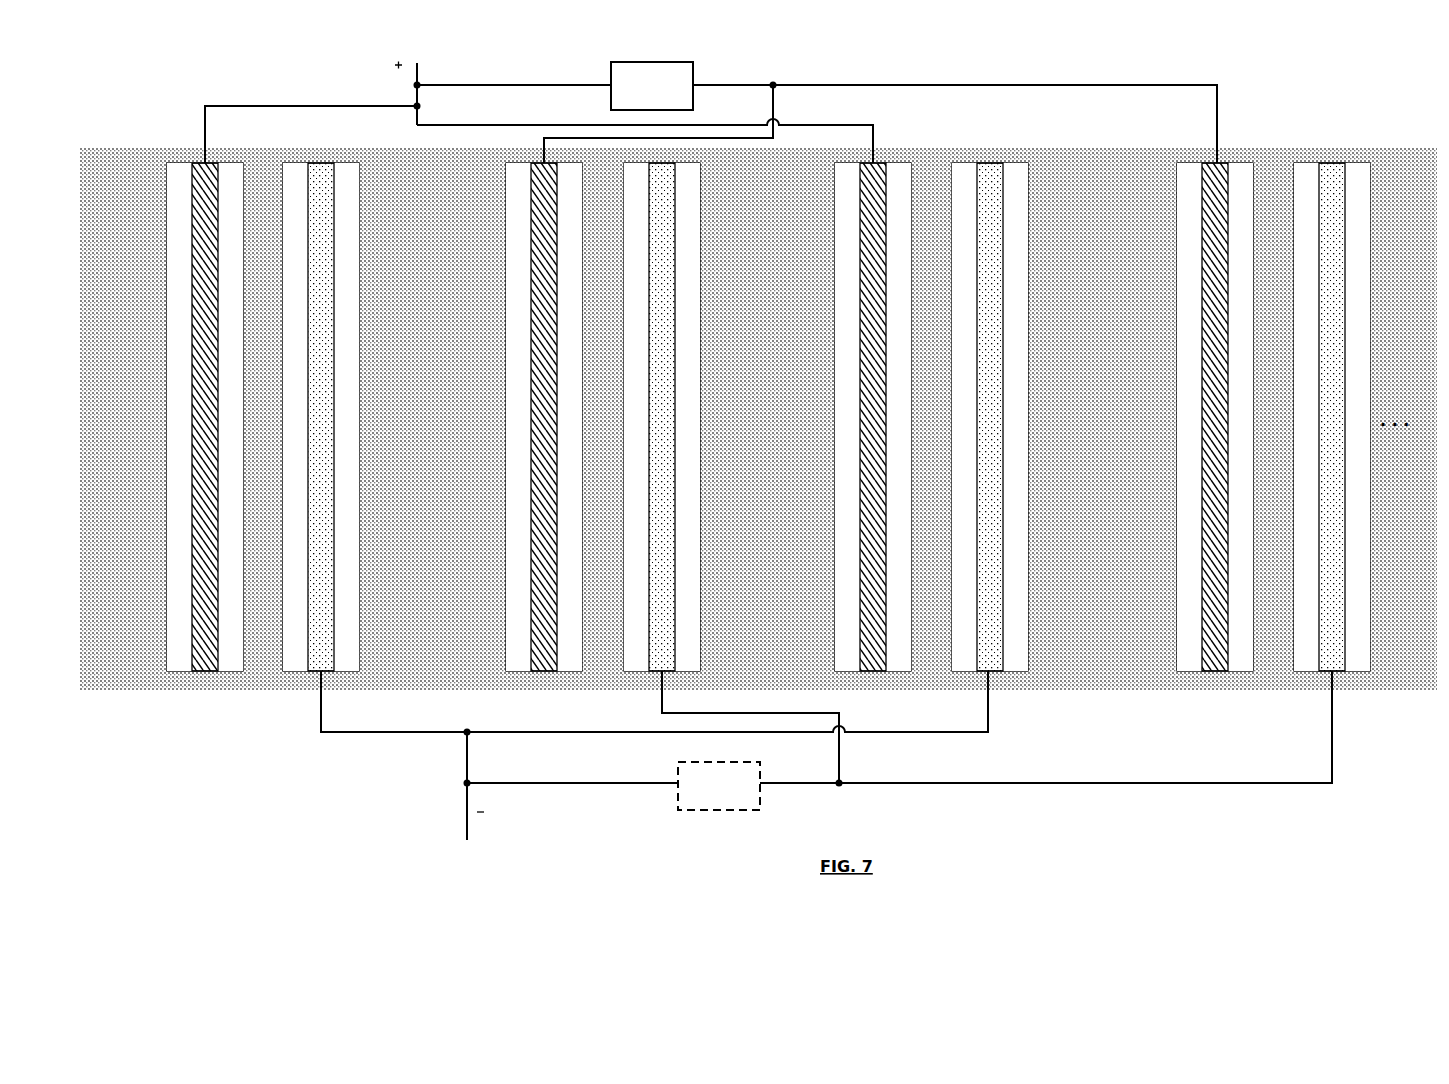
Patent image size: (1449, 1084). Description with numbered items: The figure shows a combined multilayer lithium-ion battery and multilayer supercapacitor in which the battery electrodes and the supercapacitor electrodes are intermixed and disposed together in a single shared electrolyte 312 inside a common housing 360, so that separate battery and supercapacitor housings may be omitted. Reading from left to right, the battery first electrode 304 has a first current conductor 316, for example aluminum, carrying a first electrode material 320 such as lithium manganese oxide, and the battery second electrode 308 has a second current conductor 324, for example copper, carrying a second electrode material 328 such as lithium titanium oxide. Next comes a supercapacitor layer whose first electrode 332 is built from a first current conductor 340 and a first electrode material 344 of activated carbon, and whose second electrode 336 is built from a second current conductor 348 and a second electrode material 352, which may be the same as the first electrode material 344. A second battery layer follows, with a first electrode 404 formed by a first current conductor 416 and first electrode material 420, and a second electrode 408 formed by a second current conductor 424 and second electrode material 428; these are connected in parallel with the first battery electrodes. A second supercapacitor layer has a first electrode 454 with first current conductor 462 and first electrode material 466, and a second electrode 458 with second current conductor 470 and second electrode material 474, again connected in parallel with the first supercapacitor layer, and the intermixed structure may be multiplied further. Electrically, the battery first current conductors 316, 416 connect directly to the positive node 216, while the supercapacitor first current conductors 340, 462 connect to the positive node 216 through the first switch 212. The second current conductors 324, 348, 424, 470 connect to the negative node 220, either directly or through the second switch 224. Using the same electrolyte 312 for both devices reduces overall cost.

The first switch 212 is at (660, 62).
The positive node 216 is at (418, 63).
The negative node 220 is at (467, 840).
The second switch 224 is at (732, 812).
The first electrode 304 is at (171, 372).
The second electrode 308 is at (352, 372).
The electrolyte 312 is at (758, 419).
The first current conductor 316 is at (200, 352).
The first electrode material 320 is at (178, 300).
The second current conductor 324 is at (325, 337).
The second electrode material 328 is at (300, 298).
The first electrode 332 is at (498, 356).
The second electrode 336 is at (692, 361).
The first current conductor 340 is at (545, 335).
The first electrode material 344 is at (520, 300).
The second current conductor 348 is at (665, 338).
The second electrode material 352 is at (640, 300).
The housing 360 is at (1407, 150).
The first electrode 404 is at (820, 382).
The second electrode 408 is at (1021, 386).
The first current conductor 416 is at (873, 352).
The first electrode material 420 is at (847, 300).
The second current conductor 424 is at (993, 338).
The second electrode material 428 is at (967, 298).
The first electrode 454 is at (1170, 384).
The second electrode 458 is at (1362, 389).
The first current conductor 462 is at (1213, 355).
The first electrode material 466 is at (1187, 302).
The second current conductor 470 is at (1335, 338).
The second electrode material 474 is at (1310, 300).